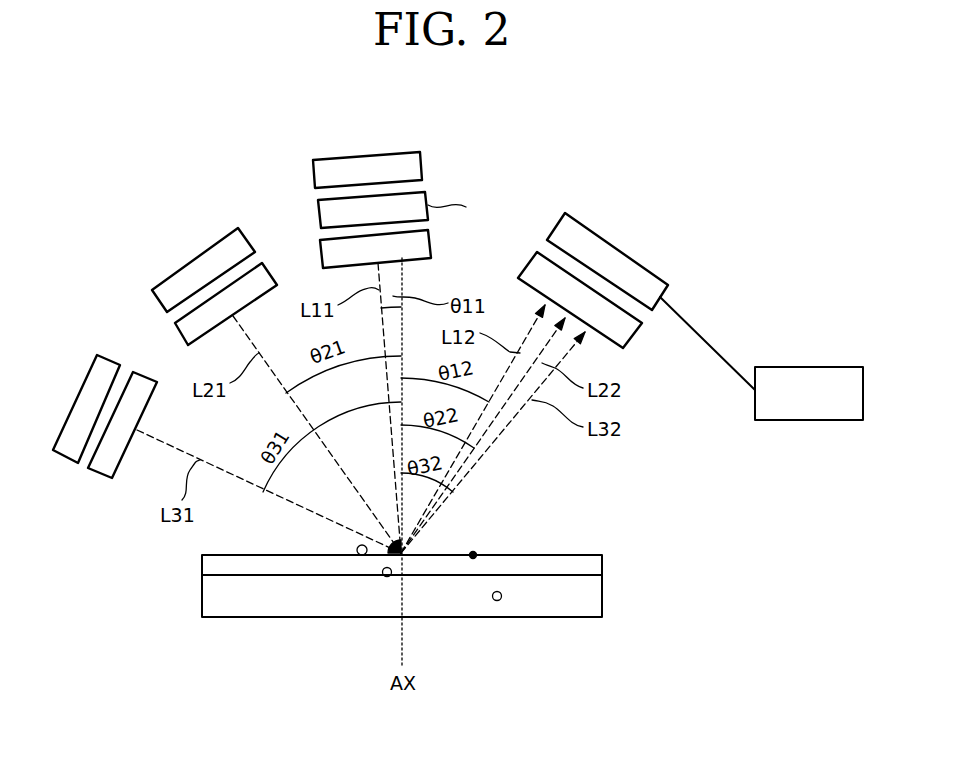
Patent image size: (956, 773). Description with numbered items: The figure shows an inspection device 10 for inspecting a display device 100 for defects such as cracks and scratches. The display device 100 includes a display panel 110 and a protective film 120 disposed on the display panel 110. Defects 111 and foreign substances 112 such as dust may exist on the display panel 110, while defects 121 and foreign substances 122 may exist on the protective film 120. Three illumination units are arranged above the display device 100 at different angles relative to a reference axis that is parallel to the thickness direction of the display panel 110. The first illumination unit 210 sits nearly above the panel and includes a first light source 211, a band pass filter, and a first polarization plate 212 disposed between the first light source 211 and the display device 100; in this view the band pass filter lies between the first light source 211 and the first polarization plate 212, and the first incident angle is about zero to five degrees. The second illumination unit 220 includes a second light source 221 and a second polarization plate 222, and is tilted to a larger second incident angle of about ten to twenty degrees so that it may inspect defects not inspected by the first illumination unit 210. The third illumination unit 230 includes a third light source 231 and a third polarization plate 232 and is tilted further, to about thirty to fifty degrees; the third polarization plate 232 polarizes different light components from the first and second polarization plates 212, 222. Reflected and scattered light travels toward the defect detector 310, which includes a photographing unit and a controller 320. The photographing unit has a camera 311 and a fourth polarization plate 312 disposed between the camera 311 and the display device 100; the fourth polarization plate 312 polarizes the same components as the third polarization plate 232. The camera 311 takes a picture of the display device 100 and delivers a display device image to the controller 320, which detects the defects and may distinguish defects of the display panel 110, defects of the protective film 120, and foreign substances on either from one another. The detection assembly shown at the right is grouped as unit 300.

The inspection device 10 is at (595, 207).
The display device 100 is at (470, 585).
The display panel 110 is at (443, 620).
The defects 111 is at (496, 632).
The foreign substances 112 is at (387, 577).
The protective film 120 is at (443, 538).
The defects 121 is at (473, 553).
The foreign substances 122 is at (357, 548).
The first illumination unit 210 is at (437, 210).
The first light source 211 is at (422, 162).
The first polarization plate 212 is at (413, 249).
The second illumination unit 220 is at (142, 287).
The second light source 221 is at (157, 300).
The second polarization plate 222 is at (180, 333).
The third illumination unit 230 is at (94, 468).
The third light source 231 is at (62, 458).
The third polarization plate 232 is at (120, 458).
The detection unit 300 is at (690, 282).
The defect detector 310 is at (627, 257).
The camera 311 is at (615, 244).
The fourth polarization plate 312 is at (608, 300).
The controller 320 is at (798, 367).